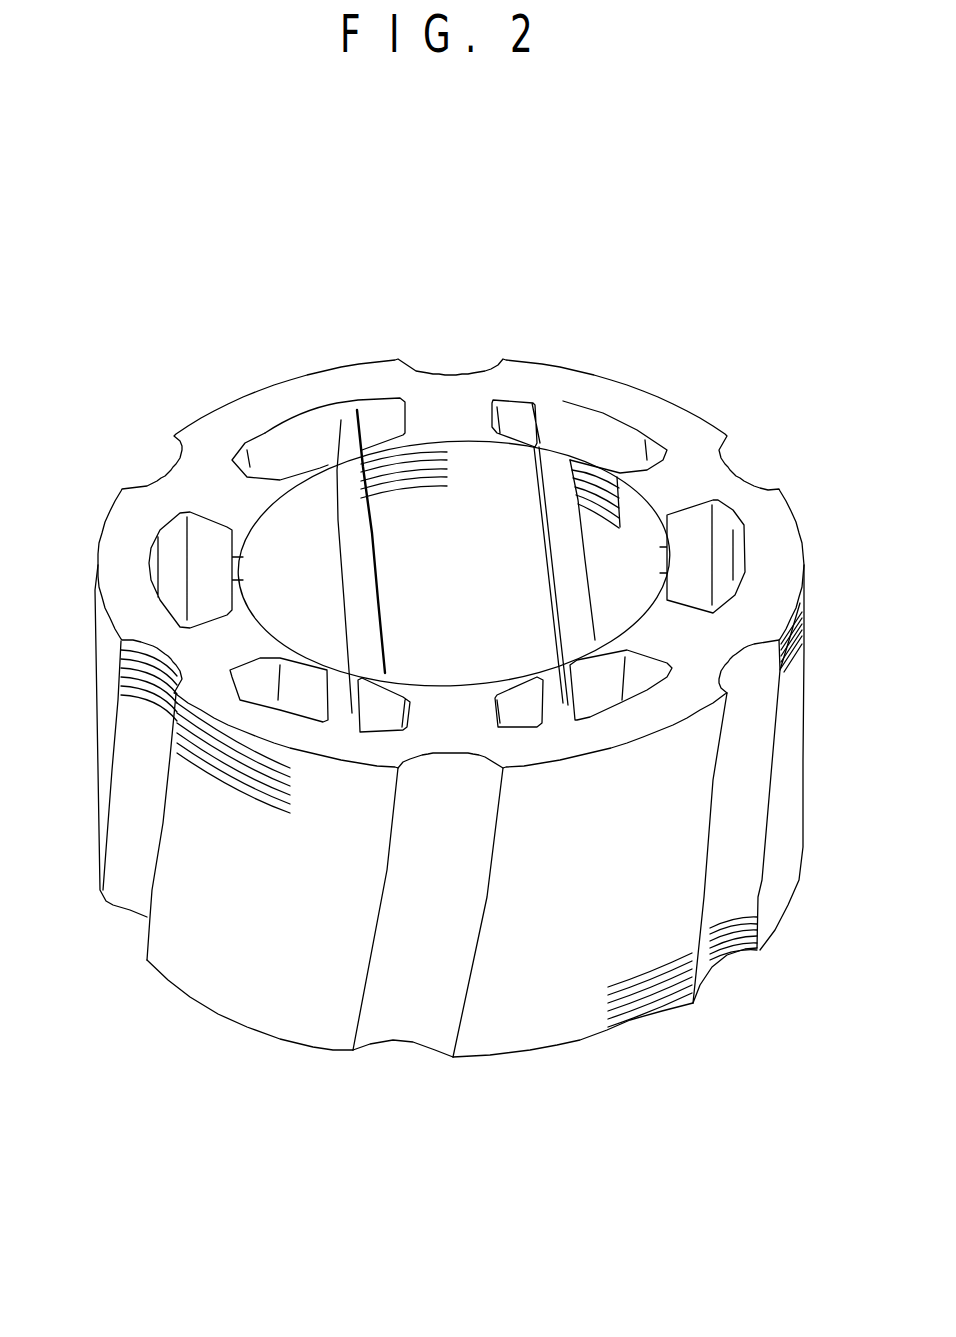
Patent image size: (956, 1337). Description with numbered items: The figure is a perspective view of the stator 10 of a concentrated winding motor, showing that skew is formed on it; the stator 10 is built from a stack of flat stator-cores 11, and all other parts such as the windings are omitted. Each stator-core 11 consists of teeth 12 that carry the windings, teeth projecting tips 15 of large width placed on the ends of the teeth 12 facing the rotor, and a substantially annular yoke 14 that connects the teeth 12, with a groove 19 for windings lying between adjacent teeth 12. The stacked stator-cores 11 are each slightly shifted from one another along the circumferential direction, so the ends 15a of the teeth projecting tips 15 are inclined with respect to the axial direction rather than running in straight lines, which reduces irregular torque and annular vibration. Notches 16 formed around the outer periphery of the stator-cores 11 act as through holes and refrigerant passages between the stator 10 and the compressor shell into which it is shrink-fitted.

The stator 10 is at (624, 381).
The stator-core 11 is at (247, 790).
The teeth 12 is at (443, 420).
The yoke 14 is at (308, 399).
The teeth projecting tips 15 is at (302, 470).
The ends of teeth projecting tips 15a is at (341, 420).
The notches 16 is at (740, 463).
The groove for windings 19 is at (200, 577).